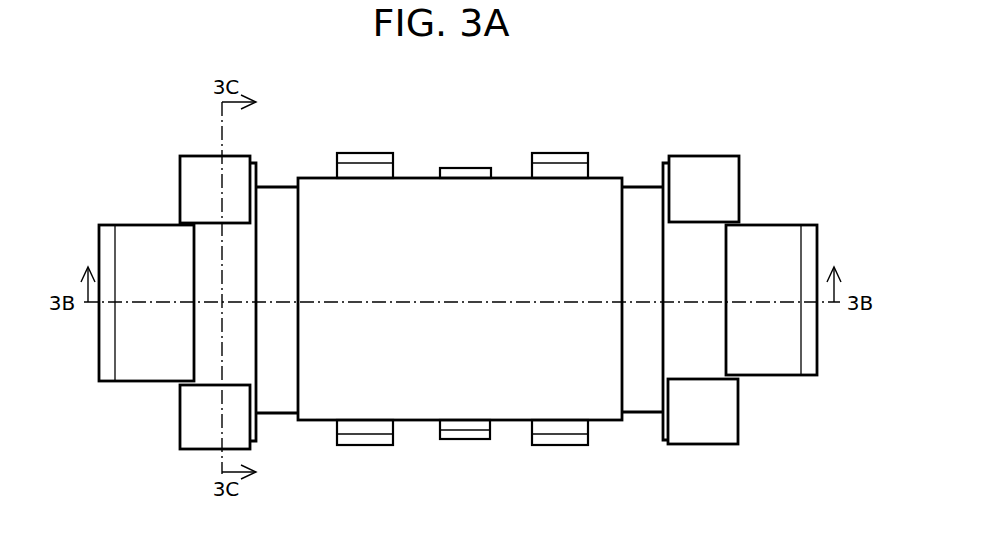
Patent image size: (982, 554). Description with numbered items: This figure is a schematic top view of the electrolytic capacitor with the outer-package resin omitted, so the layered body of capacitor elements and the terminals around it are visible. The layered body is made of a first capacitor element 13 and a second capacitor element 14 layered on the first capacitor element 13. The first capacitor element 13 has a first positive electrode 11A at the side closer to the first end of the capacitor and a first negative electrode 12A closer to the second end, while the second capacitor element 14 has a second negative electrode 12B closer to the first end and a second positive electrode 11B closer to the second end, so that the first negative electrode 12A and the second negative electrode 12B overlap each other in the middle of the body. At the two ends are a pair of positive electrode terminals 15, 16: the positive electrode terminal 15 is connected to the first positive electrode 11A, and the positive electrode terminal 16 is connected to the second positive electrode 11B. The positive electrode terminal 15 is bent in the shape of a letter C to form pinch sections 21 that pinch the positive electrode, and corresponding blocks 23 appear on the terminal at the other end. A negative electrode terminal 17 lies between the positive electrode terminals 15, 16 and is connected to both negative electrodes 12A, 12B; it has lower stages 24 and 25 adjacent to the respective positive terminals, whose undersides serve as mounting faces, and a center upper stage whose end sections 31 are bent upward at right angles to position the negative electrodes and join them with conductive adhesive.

The first positive electrode 11A is at (245, 253).
The second positive electrode 11B is at (669, 248).
The first negative electrode 12A is at (447, 347).
The second negative electrode 12B is at (507, 193).
The first capacitor element 13 is at (318, 427).
The second capacitor element 14 is at (460, 299).
The positive electrode terminal 15 is at (107, 220).
The positive electrode terminal 16 is at (813, 218).
The negative electrode terminal 17 is at (585, 143).
The pinch section 21 is at (191, 435).
The second connecting conductor 23 is at (703, 437).
The lower stage 24 is at (357, 157).
The lower stage 25 is at (572, 438).
The end section 31 is at (463, 175).